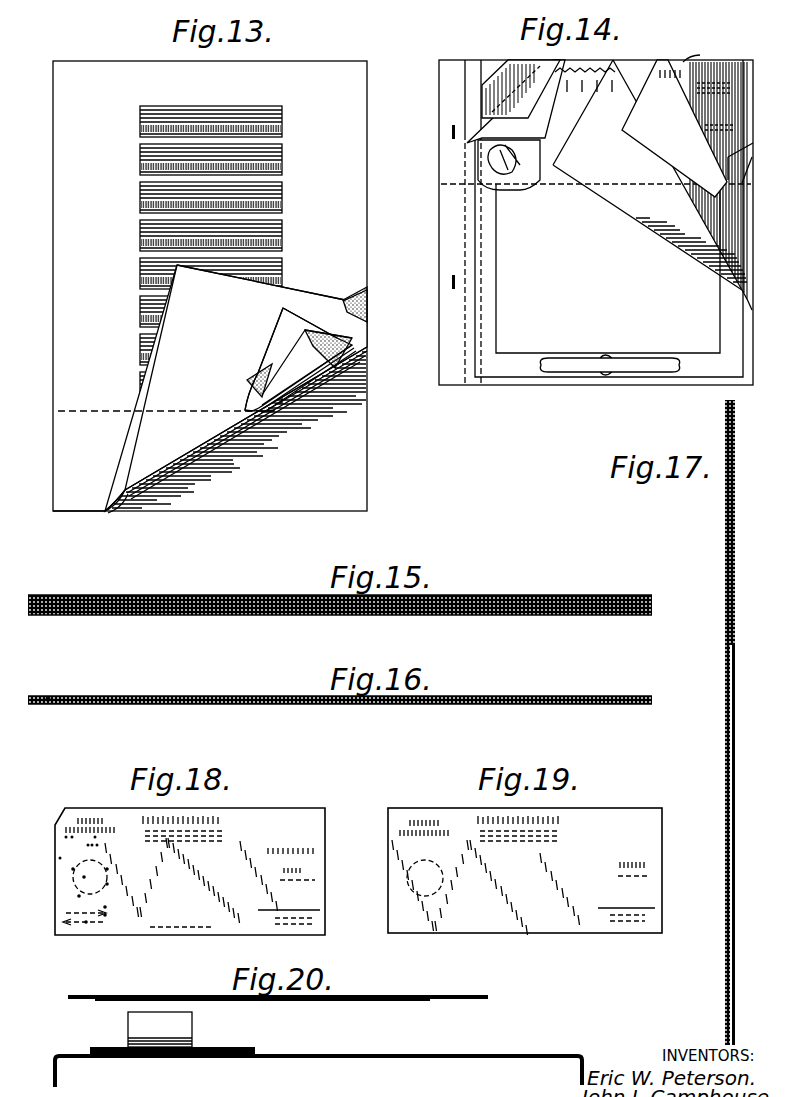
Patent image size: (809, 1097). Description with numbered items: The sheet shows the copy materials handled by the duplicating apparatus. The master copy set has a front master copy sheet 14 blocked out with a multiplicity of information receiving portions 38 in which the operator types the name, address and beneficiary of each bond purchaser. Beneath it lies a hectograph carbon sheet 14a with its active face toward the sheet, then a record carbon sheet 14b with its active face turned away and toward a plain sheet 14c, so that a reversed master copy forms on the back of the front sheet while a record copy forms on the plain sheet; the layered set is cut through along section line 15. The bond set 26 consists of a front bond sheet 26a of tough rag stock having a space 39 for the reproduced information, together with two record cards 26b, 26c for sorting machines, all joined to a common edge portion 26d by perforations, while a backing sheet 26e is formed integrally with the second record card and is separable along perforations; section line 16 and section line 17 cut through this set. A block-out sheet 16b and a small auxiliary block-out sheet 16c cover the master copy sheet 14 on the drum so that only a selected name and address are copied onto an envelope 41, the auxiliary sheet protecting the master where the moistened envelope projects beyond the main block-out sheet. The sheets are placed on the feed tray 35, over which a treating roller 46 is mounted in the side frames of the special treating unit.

In FIG. 13, the master copy sheet 14 is at (214, 287).
In FIG. 15, the master copy sheet 14 is at (364, 609).
In FIG. 20, the master copy sheet 14 is at (278, 1004).
In FIG. 13, the hectograph carbon sheet 14a is at (350, 330).
In FIG. 15, the hectograph carbon sheet 14a is at (655, 609).
In FIG. 13, the record carbon sheet 14b is at (345, 355).
In FIG. 15, the record carbon sheet 14b is at (655, 601).
In FIG. 13, the plain sheet 14c is at (360, 449).
In FIG. 15, the plain sheet 14c is at (624, 595).
In FIG. 13, the section line 15— 15 is at (400, 160).
In FIG. 14, the section line 16— 16 is at (792, 134).
In FIG. 20, the block-out sheet 16b is at (373, 1001).
In FIG. 20, the auxiliary block-out sheet 16c is at (112, 1001).
In FIG. 14, the section line 17— 17 is at (616, 411).
In FIG. 14, the bond set 26 is at (592, 225).
In FIG. 16, the bond set 26 is at (367, 706).
In FIG. 17, the bond set 26 is at (724, 719).
In FIG. 14, the bond sheet 26a is at (628, 204).
In FIG. 16, the bond sheet 26a is at (618, 706).
In FIG. 17, the bond sheet 26a is at (734, 687).
In FIG. 14, the record card 26b is at (646, 138).
In FIG. 16, the record card 26b is at (655, 700).
In FIG. 17, the record card 26b is at (733, 405).
In FIG. 19, the record card 26b is at (431, 808).
In FIG. 14, the record card 26c is at (683, 62).
In FIG. 16, the record card 26c is at (598, 697).
In FIG. 17, the record card 26c is at (725, 541).
In FIG. 18, the record card 26c is at (257, 808).
In FIG. 14, the common edge portion 26d is at (448, 208).
In FIG. 16, the common edge portion 26d is at (47, 703).
In FIG. 14, the backing sheet 26e is at (748, 233).
In FIG. 17, the backing sheet 26e is at (725, 758).
In FIG. 20, the feed tray 35 is at (400, 1058).
In FIG. 13, the information receiving portions 38 is at (143, 153).
In FIG. 14, the space 39 is at (570, 115).
In FIG. 20, the envelope 41 is at (238, 1046).
In FIG. 20, the roller 46 is at (192, 1032).